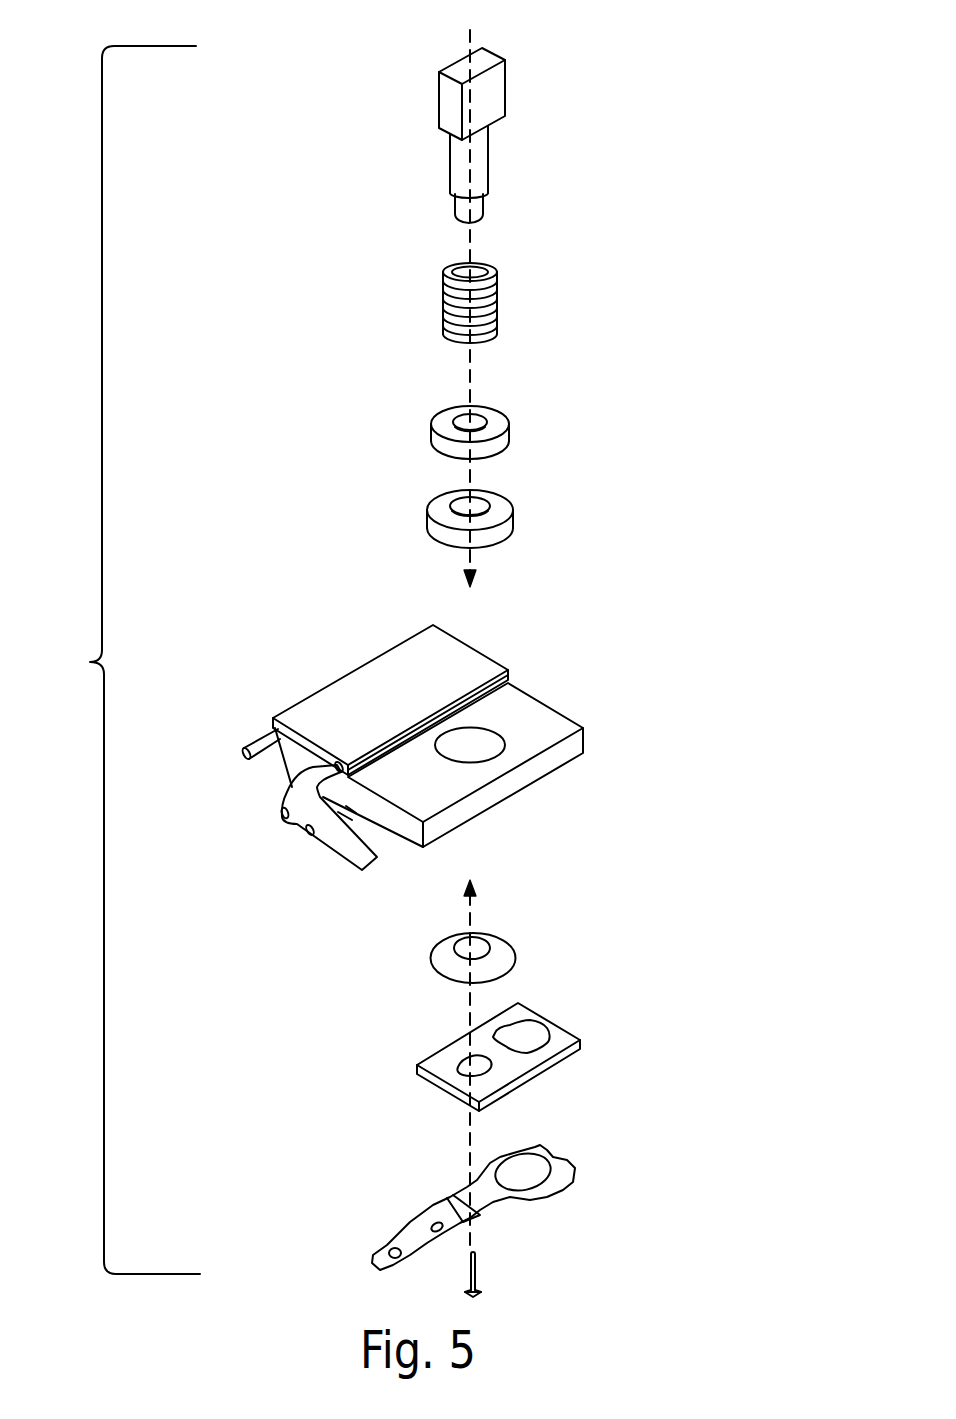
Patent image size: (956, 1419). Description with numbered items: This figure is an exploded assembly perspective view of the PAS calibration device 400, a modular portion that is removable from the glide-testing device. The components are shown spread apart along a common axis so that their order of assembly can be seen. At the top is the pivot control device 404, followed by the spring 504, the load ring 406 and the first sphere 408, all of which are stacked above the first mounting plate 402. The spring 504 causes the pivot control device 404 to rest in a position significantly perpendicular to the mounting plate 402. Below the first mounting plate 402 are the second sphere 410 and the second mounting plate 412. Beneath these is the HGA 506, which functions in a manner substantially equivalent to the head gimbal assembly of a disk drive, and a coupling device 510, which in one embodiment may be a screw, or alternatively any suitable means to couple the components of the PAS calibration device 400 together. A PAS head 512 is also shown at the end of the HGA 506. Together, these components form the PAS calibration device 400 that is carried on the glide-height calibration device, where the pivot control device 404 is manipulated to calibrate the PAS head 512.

The PAS calibration device 400 is at (115, 660).
The first mounting plate 402 is at (565, 712).
The pivot control device 404 is at (488, 150).
The load ring 406 is at (509, 422).
The first sphere 408 is at (514, 510).
The second sphere 410 is at (515, 952).
The second mounting plate 412 is at (575, 1033).
The spring 504 is at (498, 305).
The HGA 506 is at (575, 1163).
The coupling device 510 is at (481, 1275).
The PAS head 512 is at (385, 1245).